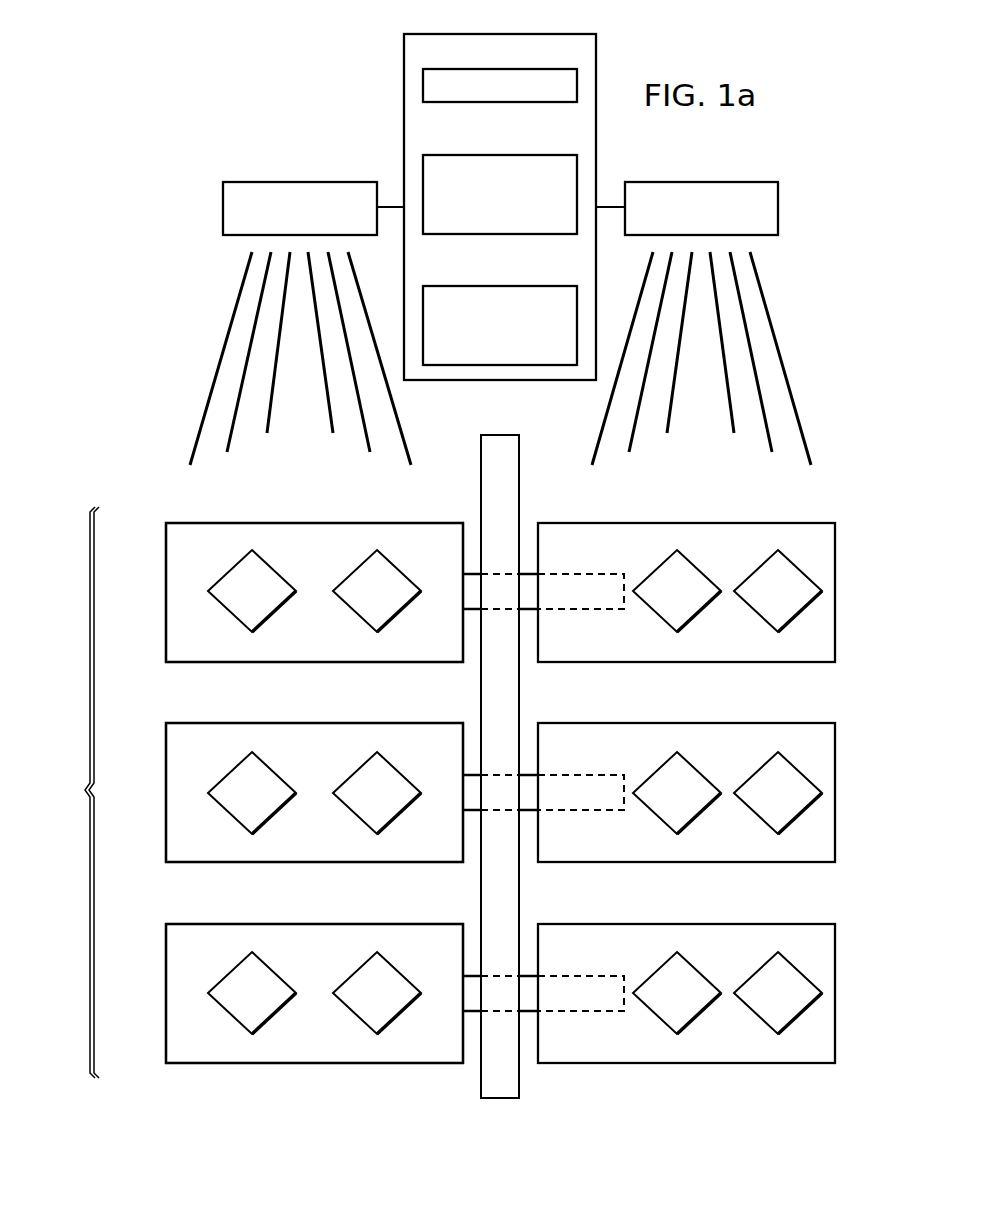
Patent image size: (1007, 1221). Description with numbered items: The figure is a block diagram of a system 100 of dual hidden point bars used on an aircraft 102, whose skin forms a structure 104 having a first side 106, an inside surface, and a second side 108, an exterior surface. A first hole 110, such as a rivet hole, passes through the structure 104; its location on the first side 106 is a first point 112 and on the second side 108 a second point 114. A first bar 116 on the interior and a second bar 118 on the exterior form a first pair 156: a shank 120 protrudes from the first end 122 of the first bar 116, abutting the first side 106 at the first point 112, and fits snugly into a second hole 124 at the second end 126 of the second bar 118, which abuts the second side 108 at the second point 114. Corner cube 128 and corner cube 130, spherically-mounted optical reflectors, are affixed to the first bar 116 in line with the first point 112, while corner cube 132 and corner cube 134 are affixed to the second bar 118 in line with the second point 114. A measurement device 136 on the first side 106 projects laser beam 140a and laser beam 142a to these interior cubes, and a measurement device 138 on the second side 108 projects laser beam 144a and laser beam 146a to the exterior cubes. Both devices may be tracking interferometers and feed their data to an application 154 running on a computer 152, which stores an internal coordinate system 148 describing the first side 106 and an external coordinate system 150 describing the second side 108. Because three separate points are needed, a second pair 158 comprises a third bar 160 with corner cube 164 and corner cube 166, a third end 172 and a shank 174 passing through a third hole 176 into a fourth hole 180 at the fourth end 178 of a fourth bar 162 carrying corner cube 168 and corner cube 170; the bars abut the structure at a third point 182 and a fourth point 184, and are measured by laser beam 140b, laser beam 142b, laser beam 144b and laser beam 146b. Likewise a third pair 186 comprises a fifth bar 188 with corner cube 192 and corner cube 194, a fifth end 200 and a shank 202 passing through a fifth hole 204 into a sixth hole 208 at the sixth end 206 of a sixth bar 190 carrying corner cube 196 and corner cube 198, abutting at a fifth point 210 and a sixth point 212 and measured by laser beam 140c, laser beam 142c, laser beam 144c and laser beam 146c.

The system 100 is at (147, 50).
The aircraft 102 is at (70, 792).
The structure 104 is at (500, 435).
The first side 106 is at (481, 465).
The second side 108 is at (519, 462).
The first hole 110 is at (477, 574).
The first point 112 is at (470, 574).
The second point 114 is at (528, 574).
The first bar 116 is at (178, 523).
The second bar 118 is at (692, 523).
The shank 120 is at (507, 610).
The first end 122 is at (463, 625).
The second hole 124 is at (610, 609).
The second end 126 is at (538, 622).
The corner cube 128 is at (252, 591).
The corner cube 130 is at (377, 591).
The corner cube 132 is at (677, 591).
The corner cube 134 is at (778, 591).
The measurement device 136 is at (223, 197).
The measurement device 138 is at (778, 197).
The laser beam 140a is at (219, 360).
The laser beam 140b is at (227, 454).
The laser beam 140c is at (266, 435).
The laser beam 142a is at (403, 437).
The laser beam 142b is at (371, 454).
The laser beam 142c is at (334, 435).
The laser beam 144a is at (598, 440).
The laser beam 144b is at (629, 454).
The laser beam 144c is at (667, 435).
The laser beam 146a is at (763, 295).
The laser beam 146b is at (773, 454).
The laser beam 146c is at (735, 435).
The internal coordinate system 148 is at (480, 234).
The external coordinate system 150 is at (530, 286).
The computer 152 is at (403, 77).
The application 154 is at (510, 102).
The first pair 156 is at (166, 592).
The second pair 158 is at (166, 793).
The third bar 160 is at (195, 723).
The fourth bar 162 is at (792, 723).
The corner cube 164 is at (252, 793).
The corner cube 166 is at (377, 793).
The corner cube 168 is at (677, 793).
The corner cube 170 is at (778, 793).
The third end 172 is at (463, 825).
The shank 174 is at (507, 810).
The third hole 176 is at (479, 775).
The fourth end 178 is at (538, 822).
The fourth hole 180 is at (610, 810).
The third point 182 is at (470, 775).
The fourth point 184 is at (528, 775).
The third pair 186 is at (166, 993).
The fifth bar 188 is at (195, 924).
The sixth bar 190 is at (792, 924).
The corner cube 192 is at (252, 993).
The corner cube 194 is at (377, 993).
The corner cube 196 is at (677, 993).
The corner cube 198 is at (778, 993).
The fifth end 200 is at (463, 1026).
The shank 202 is at (507, 1011).
The fifth hole 204 is at (479, 976).
The sixth end 206 is at (538, 1023).
The sixth hole 208 is at (610, 1011).
The fifth point 210 is at (470, 976).
The sixth point 212 is at (528, 976).